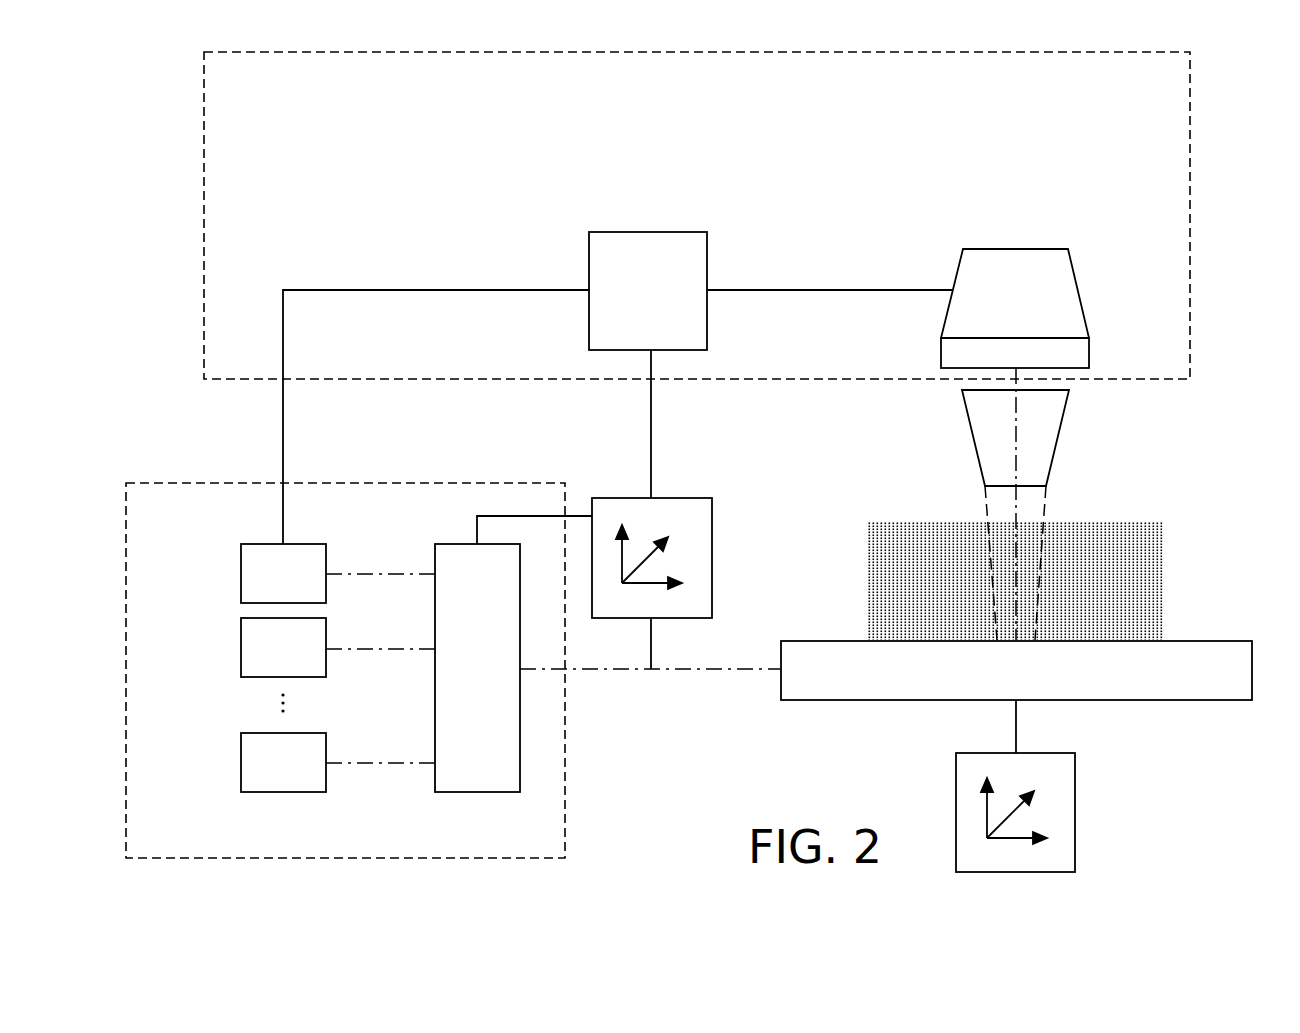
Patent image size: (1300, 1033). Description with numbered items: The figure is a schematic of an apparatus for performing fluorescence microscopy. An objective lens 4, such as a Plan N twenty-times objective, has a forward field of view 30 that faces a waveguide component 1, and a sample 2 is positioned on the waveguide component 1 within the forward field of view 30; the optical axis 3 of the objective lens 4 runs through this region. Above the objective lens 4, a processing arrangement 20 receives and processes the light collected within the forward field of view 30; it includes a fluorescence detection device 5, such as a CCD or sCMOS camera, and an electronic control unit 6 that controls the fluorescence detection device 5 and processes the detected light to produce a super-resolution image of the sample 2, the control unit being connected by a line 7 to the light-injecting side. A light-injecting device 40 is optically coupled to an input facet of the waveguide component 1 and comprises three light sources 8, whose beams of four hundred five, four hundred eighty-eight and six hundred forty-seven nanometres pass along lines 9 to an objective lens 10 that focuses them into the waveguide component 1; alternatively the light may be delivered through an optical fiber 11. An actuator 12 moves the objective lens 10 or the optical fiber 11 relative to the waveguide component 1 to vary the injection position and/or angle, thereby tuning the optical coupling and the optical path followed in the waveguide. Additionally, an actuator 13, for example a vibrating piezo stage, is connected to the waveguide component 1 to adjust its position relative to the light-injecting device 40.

The waveguide component 1 is at (1243, 653).
The sample 2 is at (1125, 590).
The optical axis 3 is at (1018, 512).
The objective lens 4 is at (985, 425).
The fluorescence detection device 5 is at (1005, 262).
The electronic control unit 6 is at (627, 247).
The signal line 7 is at (415, 290).
The light sources 8 is at (252, 580).
The sensor signal lines 9 is at (396, 570).
The objective lens 10 is at (458, 793).
The optical fiber 11 is at (717, 670).
The actuator 12 is at (622, 497).
The actuator 13 is at (1068, 797).
The processing arrangement 20 is at (1192, 127).
The forward field of view 30 is at (993, 563).
The light-injecting device 40 is at (565, 807).